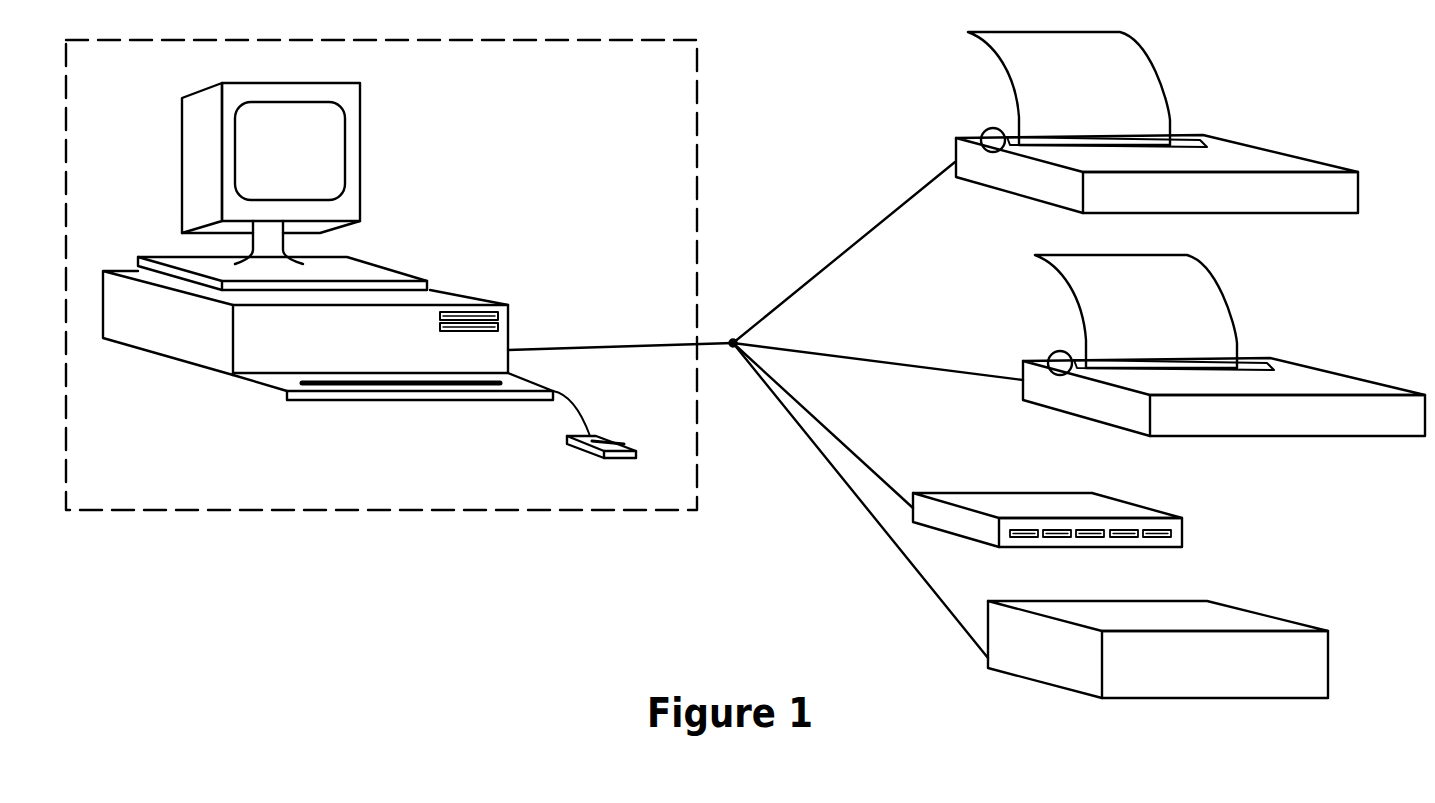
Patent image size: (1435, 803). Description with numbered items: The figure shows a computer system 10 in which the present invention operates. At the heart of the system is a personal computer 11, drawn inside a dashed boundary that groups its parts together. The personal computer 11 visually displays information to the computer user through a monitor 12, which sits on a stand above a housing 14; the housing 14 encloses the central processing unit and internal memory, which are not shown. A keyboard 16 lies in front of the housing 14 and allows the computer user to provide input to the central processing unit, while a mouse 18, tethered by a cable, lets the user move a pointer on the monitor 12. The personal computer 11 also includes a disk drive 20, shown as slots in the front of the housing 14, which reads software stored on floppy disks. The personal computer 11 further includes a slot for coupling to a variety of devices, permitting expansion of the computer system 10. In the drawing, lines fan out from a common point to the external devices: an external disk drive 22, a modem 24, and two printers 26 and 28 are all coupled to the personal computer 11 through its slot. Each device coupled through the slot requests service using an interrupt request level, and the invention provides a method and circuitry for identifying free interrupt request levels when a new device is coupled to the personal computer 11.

The computer system 10 is at (507, 577).
The personal computer (PC) 11 is at (62, 472).
The monitor 12 is at (366, 164).
The housing 14 is at (448, 289).
The keyboard 16 is at (256, 397).
The mouse 18 is at (624, 438).
The disk drive 20 is at (508, 308).
The external disk drive 22 is at (1340, 658).
The modem 24 is at (1145, 502).
The printer 26 is at (1224, 345).
The printer 28 is at (1282, 146).